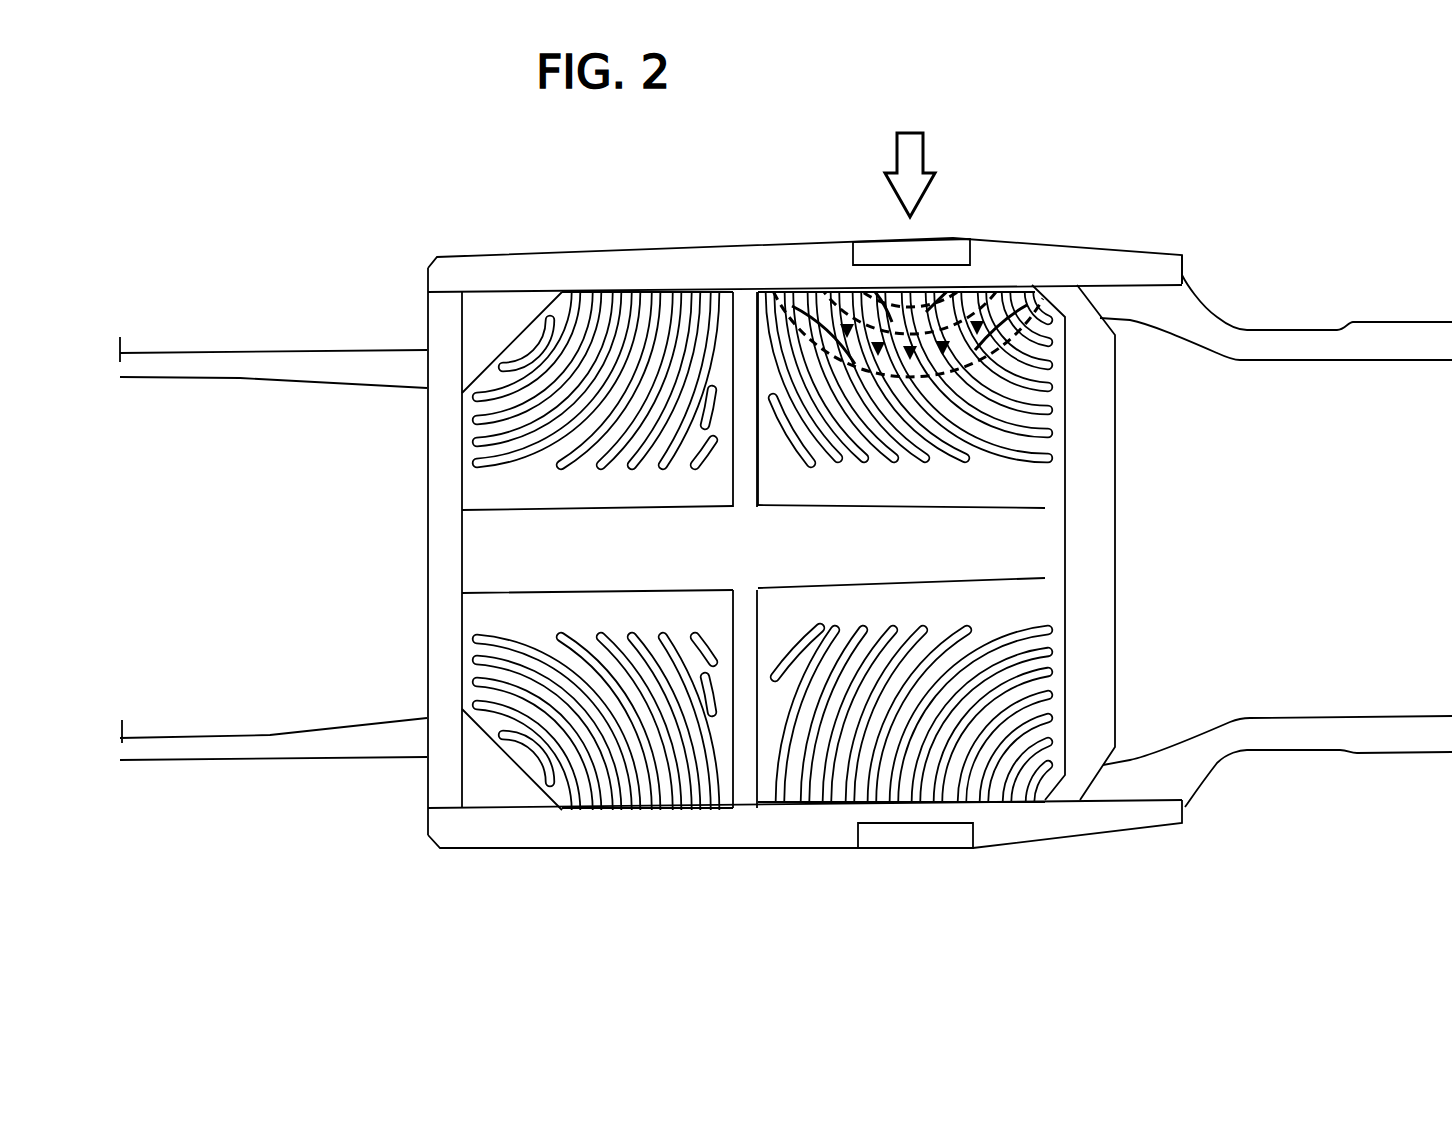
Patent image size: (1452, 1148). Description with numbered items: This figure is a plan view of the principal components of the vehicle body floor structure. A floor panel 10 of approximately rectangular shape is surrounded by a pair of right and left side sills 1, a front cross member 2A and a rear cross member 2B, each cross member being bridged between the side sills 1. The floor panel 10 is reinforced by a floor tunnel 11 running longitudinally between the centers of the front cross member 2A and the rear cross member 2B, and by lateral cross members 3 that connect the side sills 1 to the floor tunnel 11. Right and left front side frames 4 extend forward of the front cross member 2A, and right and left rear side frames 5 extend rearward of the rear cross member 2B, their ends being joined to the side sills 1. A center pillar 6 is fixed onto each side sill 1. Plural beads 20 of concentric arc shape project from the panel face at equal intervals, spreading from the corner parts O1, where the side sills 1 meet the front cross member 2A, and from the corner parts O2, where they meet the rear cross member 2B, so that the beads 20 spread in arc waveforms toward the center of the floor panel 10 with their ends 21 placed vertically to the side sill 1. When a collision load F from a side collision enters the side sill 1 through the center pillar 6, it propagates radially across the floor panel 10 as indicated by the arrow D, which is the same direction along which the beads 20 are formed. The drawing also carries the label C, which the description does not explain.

The side sill 1 is at (735, 257).
The front cross member 2A is at (428, 551).
The rear cross member 2B is at (1092, 620).
The cross member 3 is at (748, 298).
The front side frame 4 is at (238, 378).
The rear side frame 5 is at (1292, 330).
The center pillar 6 is at (937, 242).
The floor panel 10 is at (1038, 486).
The floor tunnel 11 is at (977, 545).
The bead 20 is at (585, 330).
The end of bead 21 is at (687, 292).
The vertical joint part O1 is at (440, 257).
The vertical joint part O2 is at (1064, 282).
The converter C is at (1142, 200).
The arrow D is at (852, 252).
The collision load F is at (910, 159).